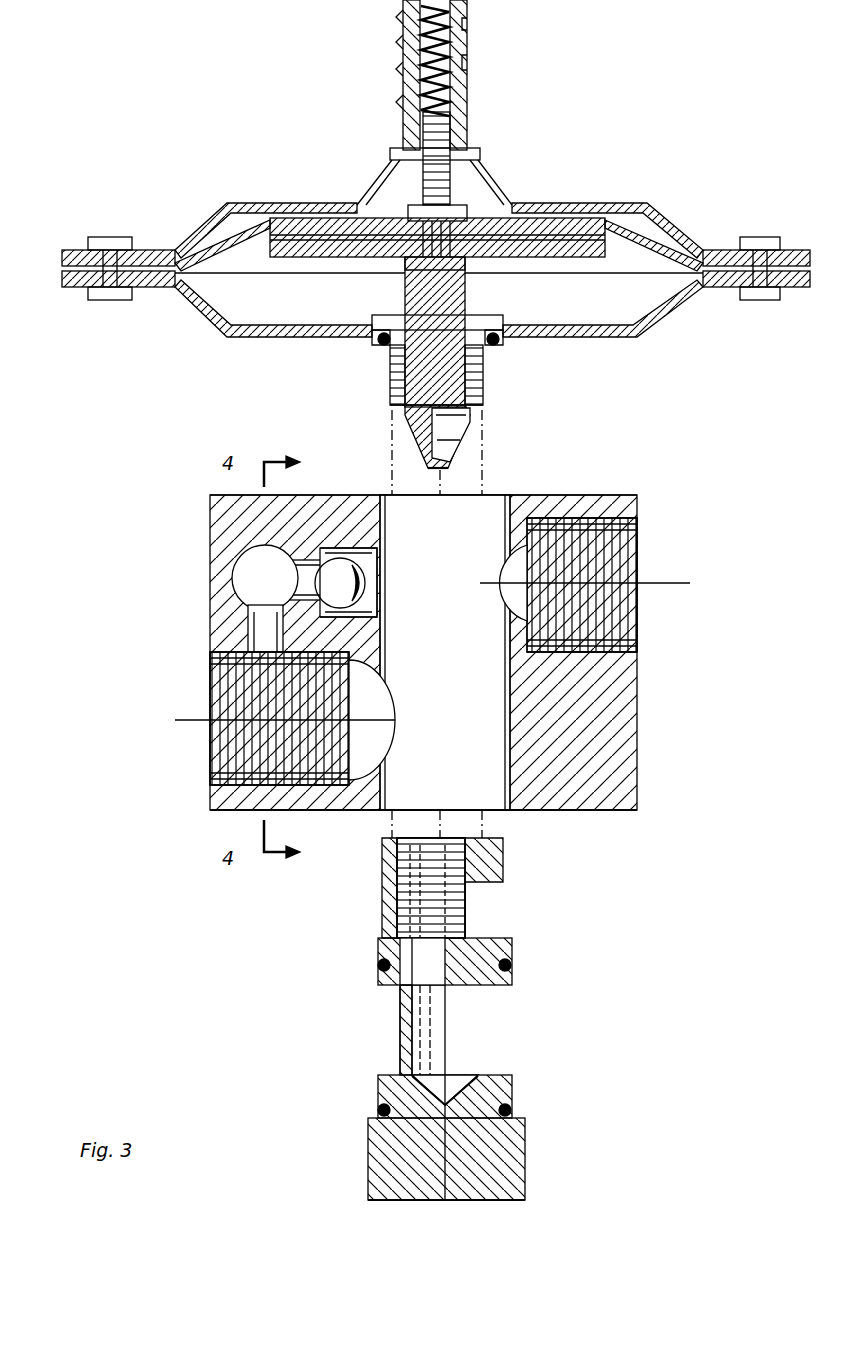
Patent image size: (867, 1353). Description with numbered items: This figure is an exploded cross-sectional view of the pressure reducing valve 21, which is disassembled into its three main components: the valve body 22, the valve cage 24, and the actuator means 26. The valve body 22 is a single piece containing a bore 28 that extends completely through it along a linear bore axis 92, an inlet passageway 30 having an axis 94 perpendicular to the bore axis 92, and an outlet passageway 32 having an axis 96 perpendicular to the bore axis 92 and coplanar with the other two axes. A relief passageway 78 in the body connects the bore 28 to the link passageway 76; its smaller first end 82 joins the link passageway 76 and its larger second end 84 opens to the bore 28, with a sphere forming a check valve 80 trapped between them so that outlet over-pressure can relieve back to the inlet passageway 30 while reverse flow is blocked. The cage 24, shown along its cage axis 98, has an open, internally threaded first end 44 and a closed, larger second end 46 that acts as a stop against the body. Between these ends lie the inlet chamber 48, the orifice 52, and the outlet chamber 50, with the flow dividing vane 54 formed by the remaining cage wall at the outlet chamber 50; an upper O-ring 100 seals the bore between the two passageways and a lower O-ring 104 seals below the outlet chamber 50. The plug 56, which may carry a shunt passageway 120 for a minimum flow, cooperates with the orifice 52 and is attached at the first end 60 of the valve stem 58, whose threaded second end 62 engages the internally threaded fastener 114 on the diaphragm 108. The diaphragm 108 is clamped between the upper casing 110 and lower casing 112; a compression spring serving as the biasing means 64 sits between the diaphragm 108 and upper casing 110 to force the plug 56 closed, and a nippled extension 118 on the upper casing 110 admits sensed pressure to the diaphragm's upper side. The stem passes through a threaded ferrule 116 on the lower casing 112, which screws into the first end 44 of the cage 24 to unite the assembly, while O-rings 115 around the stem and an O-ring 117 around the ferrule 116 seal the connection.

The pressure reducing valve 21 is at (160, 841).
The valve body 22 is at (158, 549).
The valve cage 24 is at (348, 994).
The actuator means 26 is at (343, 176).
The bore 28 is at (480, 678).
The inlet passageway 30 is at (620, 626).
The outlet passageway 32 is at (236, 751).
The first end of the cage 44 is at (456, 851).
The second end of the cage 46 is at (500, 1166).
The inlet chamber 48 is at (451, 916).
The outlet chamber 50 is at (436, 1046).
The orifice 52 is at (456, 972).
The flow dividing vane 54 is at (408, 1040).
The plug 56 is at (470, 436).
The valve stem 58 is at (480, 371).
The first end of the valve stem 60 is at (412, 404).
The second end of the valve stem 62 is at (410, 276).
The biasing means 64 is at (446, 96).
The link passageway 76 is at (262, 635).
The relief passageway 78 is at (365, 547).
The check valve 80 is at (348, 586).
The first end of the relief passageway 82 is at (300, 547).
The second end of the relief passageway 84 is at (376, 590).
The bore axis 92 is at (450, 581).
The inlet passageway axis 94 is at (612, 583).
The outlet passageway axis 96 is at (255, 717).
The cage axis 98 is at (445, 1212).
The upper O-ring 100 is at (509, 966).
The lower O-ring 104 is at (511, 1113).
The diaphragm 108 is at (655, 233).
The upper casing 110 is at (625, 204).
The lower casing 112 is at (636, 340).
The fastener 114 is at (462, 214).
The O-rings 115 is at (471, 333).
The ferrule 116 is at (490, 401).
The O-ring 117 is at (505, 341).
The nippled extension 118 is at (468, 46).
The shunt passageway 120 is at (448, 470).